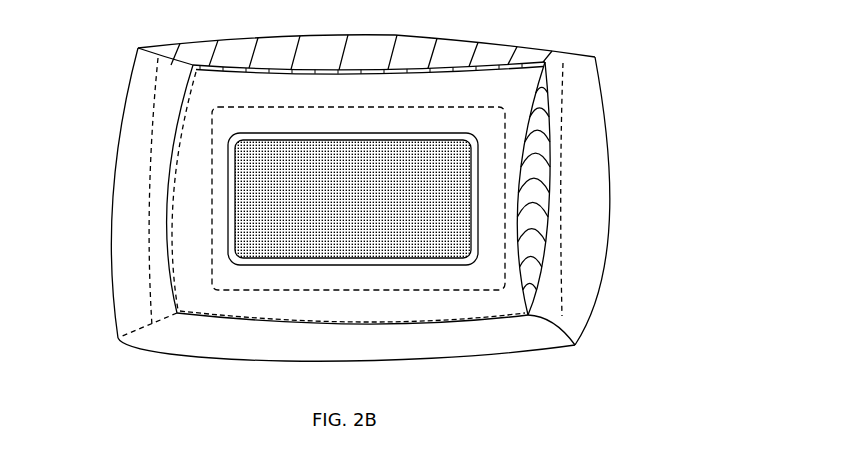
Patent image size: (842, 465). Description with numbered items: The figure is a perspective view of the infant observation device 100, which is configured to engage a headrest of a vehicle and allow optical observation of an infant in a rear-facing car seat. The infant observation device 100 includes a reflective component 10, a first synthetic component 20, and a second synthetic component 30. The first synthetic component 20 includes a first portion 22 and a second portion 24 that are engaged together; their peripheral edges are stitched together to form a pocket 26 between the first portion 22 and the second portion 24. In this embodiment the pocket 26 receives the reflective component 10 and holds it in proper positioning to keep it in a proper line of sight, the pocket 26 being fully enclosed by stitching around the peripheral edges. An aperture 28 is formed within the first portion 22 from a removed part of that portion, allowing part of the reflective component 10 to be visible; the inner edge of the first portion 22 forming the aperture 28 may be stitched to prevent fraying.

The infant observation device 100 is at (416, 186).
The reflective component 10 is at (512, 127).
The aperture 28 is at (481, 154).
The pocket 26 is at (539, 183).
The second portion 24 is at (557, 243).
The first portion 22 is at (531, 252).
The first synthetic component 20 is at (165, 138).
The second synthetic component 30 is at (96, 274).